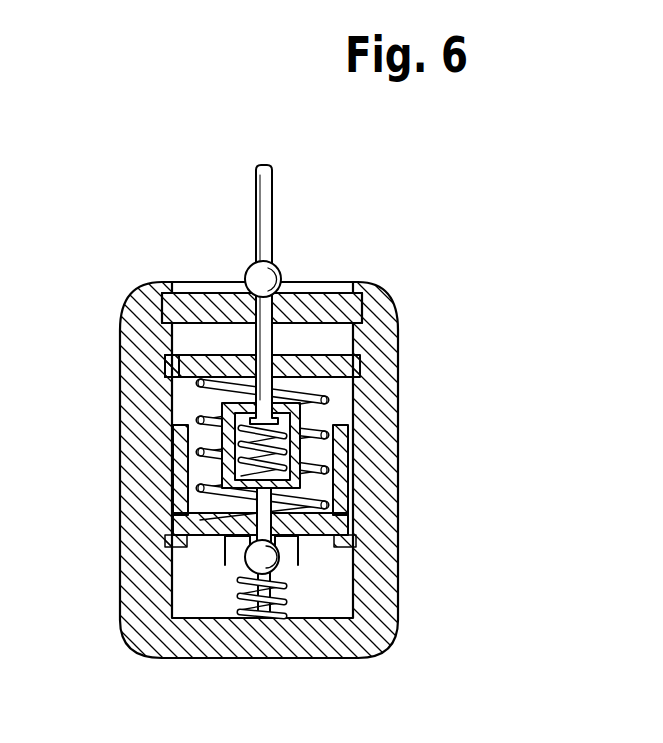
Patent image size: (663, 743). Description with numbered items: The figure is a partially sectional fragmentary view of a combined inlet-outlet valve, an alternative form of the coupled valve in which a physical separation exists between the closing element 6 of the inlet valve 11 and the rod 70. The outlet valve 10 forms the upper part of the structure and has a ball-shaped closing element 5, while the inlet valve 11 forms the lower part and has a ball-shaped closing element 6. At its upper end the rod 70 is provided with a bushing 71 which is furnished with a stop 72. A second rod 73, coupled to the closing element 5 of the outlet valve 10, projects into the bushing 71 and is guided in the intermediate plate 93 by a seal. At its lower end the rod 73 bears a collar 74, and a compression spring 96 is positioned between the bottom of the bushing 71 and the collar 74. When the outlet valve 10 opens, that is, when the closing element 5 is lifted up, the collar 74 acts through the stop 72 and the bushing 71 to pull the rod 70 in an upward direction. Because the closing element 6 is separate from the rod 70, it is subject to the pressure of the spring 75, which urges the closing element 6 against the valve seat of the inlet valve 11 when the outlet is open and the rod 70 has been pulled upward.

The closing element 5 is at (280, 271).
The closing element 6 is at (242, 570).
The outlet valve 10 is at (246, 284).
The inlet valve 11 is at (290, 572).
The rod 70 is at (330, 500).
The bushing 71 is at (180, 440).
The stop 72 is at (222, 406).
The rod 73 is at (265, 346).
The collar 74 is at (280, 408).
The spring 75 is at (232, 604).
The intermediate plate 93 is at (168, 359).
The compression spring 96 is at (292, 452).